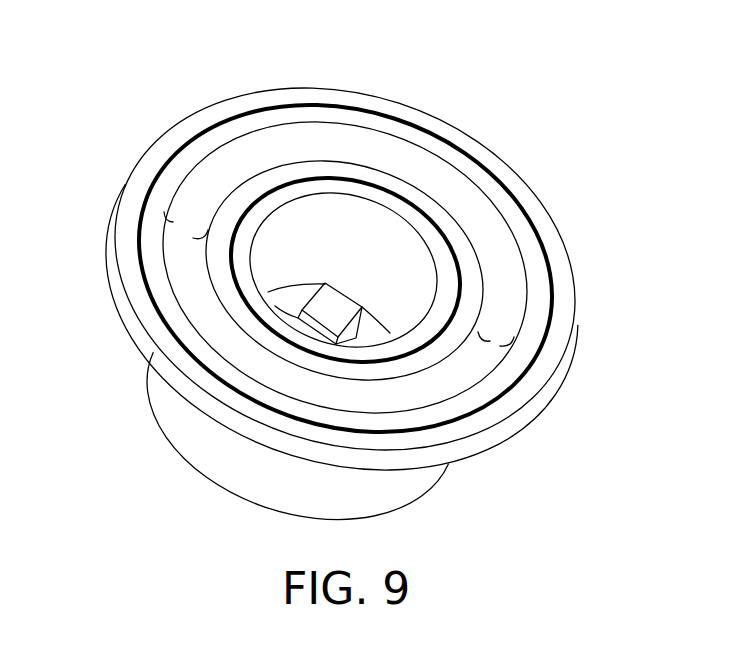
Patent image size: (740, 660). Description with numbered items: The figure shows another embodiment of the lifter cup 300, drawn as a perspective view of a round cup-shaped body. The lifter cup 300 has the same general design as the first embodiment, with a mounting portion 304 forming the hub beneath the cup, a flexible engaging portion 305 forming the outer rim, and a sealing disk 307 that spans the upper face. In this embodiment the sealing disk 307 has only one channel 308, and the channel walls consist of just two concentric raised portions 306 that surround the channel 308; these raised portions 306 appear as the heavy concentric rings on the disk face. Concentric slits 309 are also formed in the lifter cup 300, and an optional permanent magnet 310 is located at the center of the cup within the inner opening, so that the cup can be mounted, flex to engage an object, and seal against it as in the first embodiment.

The lifter cup 300 is at (436, 76).
The mounting portion 304 is at (163, 405).
The flexible engaging portion 305 is at (108, 257).
The raised portions 306 is at (290, 194).
The sealing disk 307 is at (522, 400).
The channel 308 is at (512, 317).
The concentric slits 309 is at (545, 252).
The permanent magnet 310 is at (336, 296).